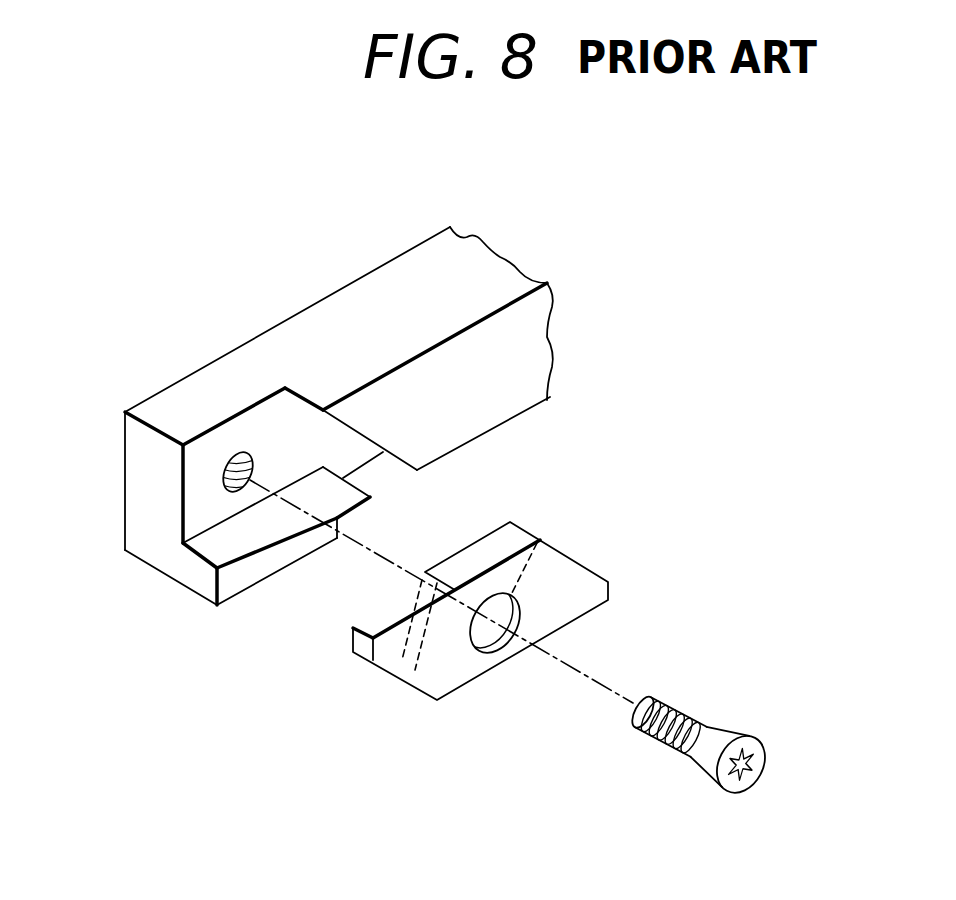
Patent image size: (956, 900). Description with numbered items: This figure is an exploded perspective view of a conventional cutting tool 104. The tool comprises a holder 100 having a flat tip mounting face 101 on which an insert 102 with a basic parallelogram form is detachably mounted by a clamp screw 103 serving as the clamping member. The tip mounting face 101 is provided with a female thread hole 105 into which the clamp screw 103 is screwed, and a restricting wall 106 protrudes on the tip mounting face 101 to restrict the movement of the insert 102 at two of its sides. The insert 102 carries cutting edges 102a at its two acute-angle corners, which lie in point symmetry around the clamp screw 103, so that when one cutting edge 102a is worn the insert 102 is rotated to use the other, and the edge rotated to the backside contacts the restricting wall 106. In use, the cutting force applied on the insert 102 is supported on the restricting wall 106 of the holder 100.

The holder 100 is at (462, 263).
The tip mounting face 101 is at (233, 437).
The insert 102 is at (509, 662).
The cutting edge 102a is at (573, 583).
The clamp screw 103 is at (697, 702).
The cutting tool 104 is at (326, 268).
The female thread hole 105 is at (227, 483).
The restricting wall 106 is at (313, 401).